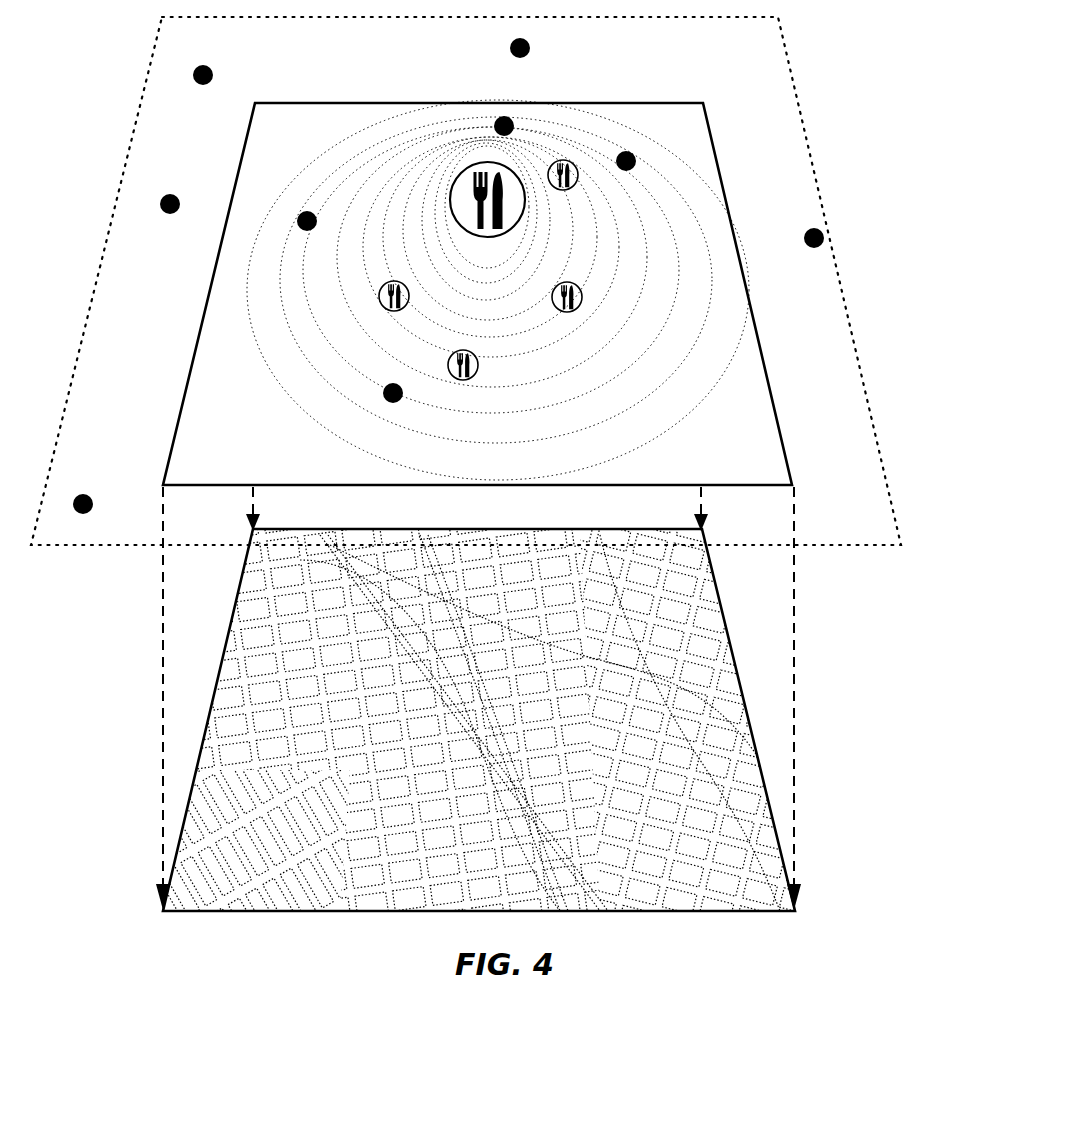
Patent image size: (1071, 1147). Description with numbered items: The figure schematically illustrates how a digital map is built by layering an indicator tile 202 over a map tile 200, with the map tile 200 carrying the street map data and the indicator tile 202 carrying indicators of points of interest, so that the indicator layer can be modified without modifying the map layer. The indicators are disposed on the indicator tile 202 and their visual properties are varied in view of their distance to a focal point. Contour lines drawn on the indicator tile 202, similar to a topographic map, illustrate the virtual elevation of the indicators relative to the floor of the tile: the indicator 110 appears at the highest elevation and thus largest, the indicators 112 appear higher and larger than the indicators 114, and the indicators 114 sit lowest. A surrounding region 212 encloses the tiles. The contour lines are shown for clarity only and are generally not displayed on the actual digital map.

The indicators 114 is at (633, 153).
The indicator 110 is at (525, 200).
The indicators 112 is at (582, 294).
The indicator tile 202 is at (756, 318).
The geographic region 212 is at (880, 452).
The map tile 200 is at (733, 653).